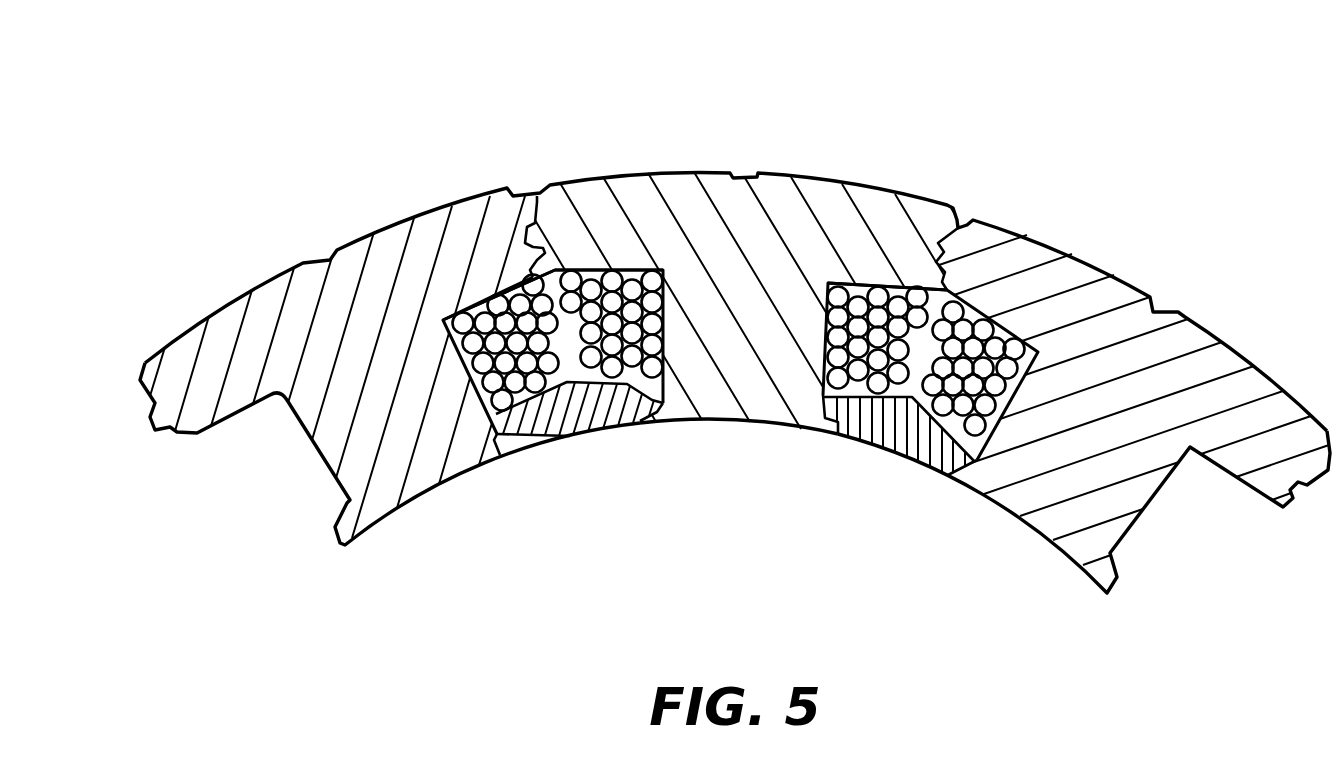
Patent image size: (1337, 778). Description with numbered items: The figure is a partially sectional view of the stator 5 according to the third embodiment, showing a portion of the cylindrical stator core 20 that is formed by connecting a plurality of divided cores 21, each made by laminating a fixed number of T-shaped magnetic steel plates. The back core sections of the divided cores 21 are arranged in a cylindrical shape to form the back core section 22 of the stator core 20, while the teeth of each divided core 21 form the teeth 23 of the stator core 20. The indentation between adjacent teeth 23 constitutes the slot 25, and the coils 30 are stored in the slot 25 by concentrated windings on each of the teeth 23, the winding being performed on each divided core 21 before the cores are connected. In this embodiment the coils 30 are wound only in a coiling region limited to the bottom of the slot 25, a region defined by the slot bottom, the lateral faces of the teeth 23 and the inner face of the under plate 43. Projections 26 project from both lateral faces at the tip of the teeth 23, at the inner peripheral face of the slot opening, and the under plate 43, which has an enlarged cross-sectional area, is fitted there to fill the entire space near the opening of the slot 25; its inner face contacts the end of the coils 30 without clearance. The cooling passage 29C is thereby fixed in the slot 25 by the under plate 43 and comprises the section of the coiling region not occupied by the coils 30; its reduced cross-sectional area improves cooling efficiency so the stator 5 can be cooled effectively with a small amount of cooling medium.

The stator 5 is at (868, 180).
The stator core 20 is at (712, 170).
The divided core 21 is at (268, 280).
The back core section 22 is at (197, 347).
The teeth 23 is at (415, 470).
The slot 25 is at (498, 300).
The projections 26 is at (520, 440).
The cooling passage 29C is at (560, 330).
The coils 30 is at (530, 277).
The under plate 43 is at (578, 430).